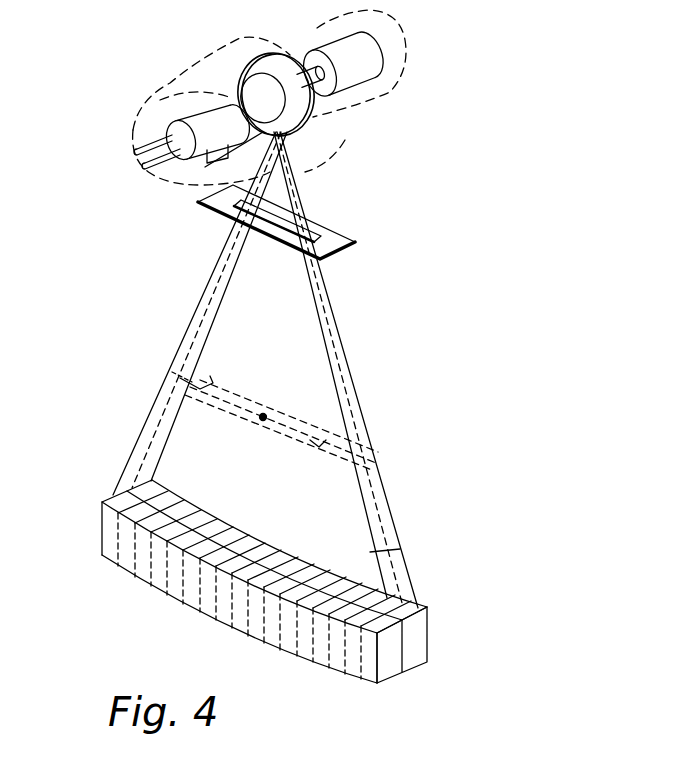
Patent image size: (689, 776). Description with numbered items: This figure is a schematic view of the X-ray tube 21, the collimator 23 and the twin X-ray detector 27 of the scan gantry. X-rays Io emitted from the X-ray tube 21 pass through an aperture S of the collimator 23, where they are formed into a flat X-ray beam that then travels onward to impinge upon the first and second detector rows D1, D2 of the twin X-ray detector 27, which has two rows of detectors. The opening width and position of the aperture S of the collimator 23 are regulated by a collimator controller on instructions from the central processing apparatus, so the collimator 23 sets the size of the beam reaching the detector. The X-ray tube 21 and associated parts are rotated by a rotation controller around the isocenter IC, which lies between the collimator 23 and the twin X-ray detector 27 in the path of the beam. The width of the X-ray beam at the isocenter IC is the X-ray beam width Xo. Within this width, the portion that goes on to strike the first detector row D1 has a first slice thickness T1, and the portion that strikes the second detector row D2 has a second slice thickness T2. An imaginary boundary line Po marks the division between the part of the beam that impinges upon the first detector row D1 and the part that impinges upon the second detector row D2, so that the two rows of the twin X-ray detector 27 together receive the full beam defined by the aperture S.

The X-ray tube 21 is at (177, 70).
The X-rays Io is at (293, 187).
The aperture S is at (313, 221).
The collimator 23 is at (350, 232).
The incident fan beam Xi is at (231, 292).
The isocenter IC is at (264, 413).
The second slice thickness T2 is at (213, 383).
The first slice thickness T1 is at (182, 375).
The X-ray beam width Xo is at (315, 442).
The twin X-ray detector 27 is at (86, 519).
The imaginary boundary line Po is at (374, 552).
The second detector row D2 is at (419, 633).
The first detector row D1 is at (389, 666).